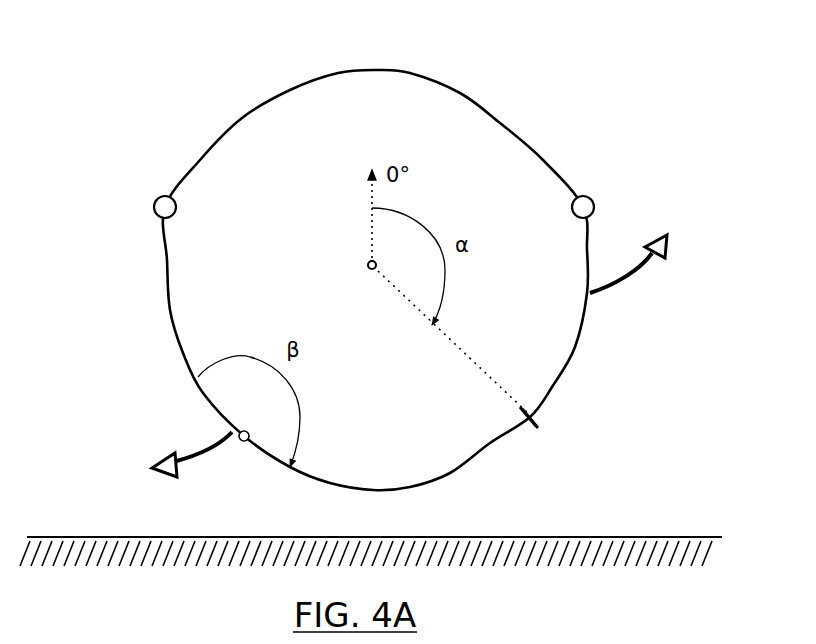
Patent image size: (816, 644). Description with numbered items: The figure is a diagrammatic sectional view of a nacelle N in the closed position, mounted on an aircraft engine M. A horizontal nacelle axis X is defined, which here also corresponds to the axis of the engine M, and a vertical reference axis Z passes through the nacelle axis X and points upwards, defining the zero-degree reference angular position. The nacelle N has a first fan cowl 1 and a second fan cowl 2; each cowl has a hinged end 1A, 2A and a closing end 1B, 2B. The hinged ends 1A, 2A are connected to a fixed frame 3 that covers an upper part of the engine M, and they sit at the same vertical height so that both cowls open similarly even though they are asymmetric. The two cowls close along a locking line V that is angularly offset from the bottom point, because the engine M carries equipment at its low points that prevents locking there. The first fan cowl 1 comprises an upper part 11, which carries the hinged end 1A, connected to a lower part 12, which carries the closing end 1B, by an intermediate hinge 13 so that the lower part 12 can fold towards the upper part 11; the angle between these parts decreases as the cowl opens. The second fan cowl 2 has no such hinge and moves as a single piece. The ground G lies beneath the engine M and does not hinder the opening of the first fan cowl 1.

The aircraft engine M is at (364, 416).
The first fan cowl 1 is at (183, 353).
The hinged end 1A is at (170, 196).
The closing end 1B is at (527, 423).
The upper part 11 is at (170, 310).
The lower part 12 is at (330, 483).
The intermediate hinge 13 is at (243, 443).
The second fan cowl 2 is at (575, 348).
The hinged end 2A is at (583, 196).
The closing end 2B is at (545, 416).
The frame 3 is at (242, 118).
The nacelle axis X is at (359, 270).
The vertical reference axis Z is at (372, 196).
The locking line V is at (552, 410).
The nacelle N is at (675, 192).
The ground G is at (680, 537).